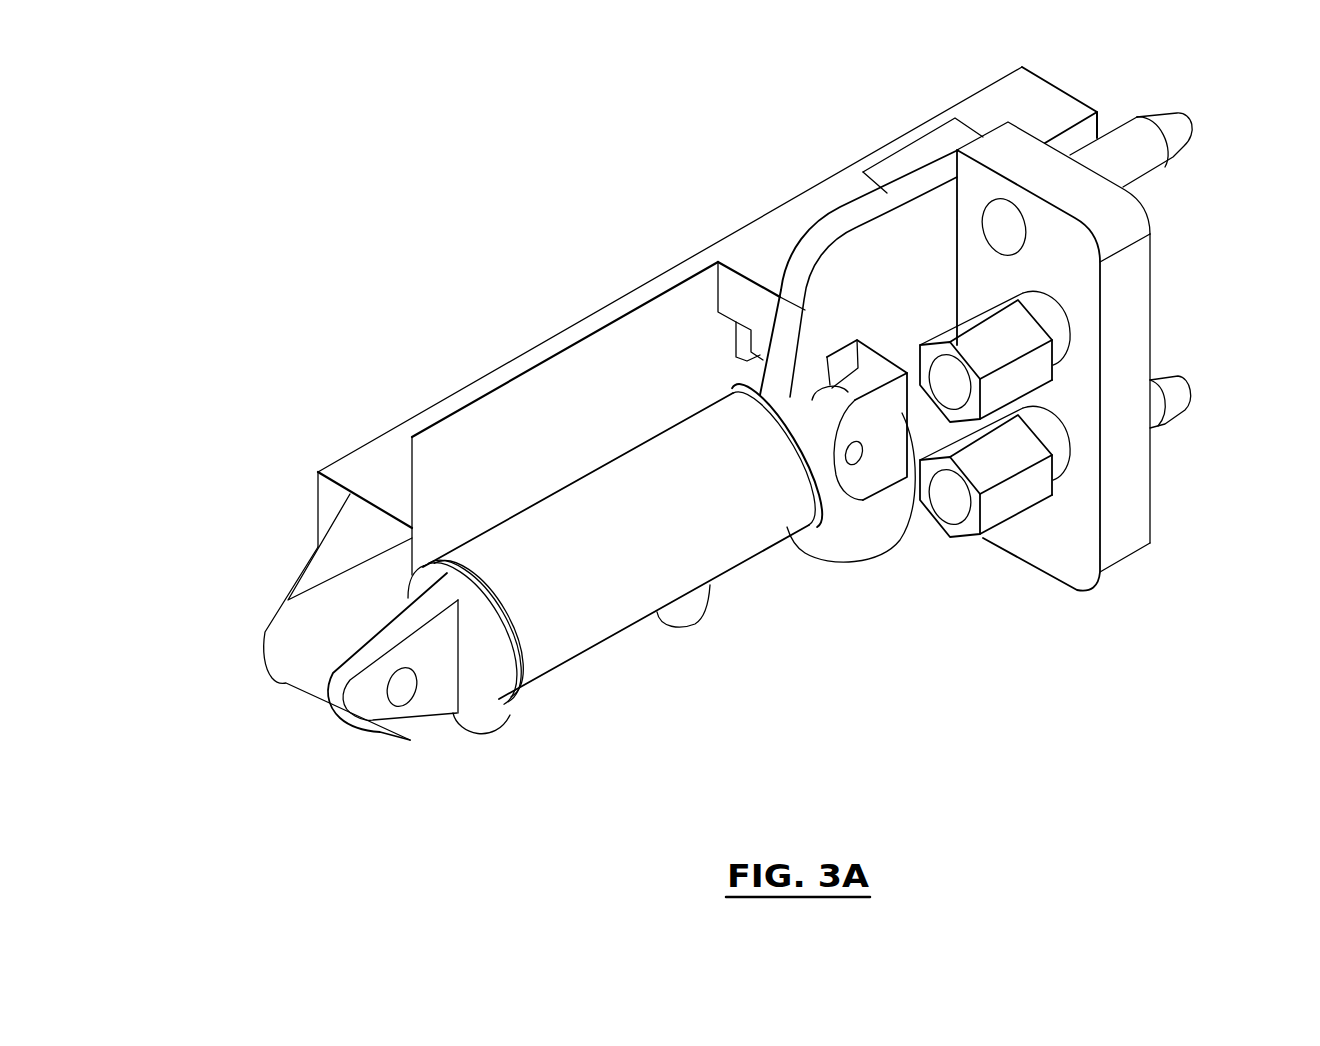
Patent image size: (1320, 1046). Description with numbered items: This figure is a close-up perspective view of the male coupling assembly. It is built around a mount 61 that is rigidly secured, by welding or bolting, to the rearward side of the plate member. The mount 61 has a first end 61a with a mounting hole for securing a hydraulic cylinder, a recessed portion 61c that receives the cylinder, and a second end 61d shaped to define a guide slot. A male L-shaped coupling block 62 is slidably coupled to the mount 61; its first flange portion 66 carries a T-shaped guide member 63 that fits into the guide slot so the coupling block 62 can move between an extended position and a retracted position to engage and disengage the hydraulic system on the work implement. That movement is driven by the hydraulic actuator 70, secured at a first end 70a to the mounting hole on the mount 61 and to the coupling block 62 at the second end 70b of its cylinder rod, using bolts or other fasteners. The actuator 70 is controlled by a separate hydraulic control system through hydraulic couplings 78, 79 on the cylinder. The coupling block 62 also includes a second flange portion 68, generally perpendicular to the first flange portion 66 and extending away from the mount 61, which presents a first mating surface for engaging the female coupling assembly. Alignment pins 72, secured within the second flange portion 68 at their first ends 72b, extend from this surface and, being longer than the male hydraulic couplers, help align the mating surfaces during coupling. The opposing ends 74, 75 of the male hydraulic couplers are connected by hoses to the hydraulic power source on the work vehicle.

The mount 61 is at (368, 467).
The first end of the mount 61a is at (288, 678).
The recessed portion 61c is at (500, 433).
The second end of the mount 61d is at (765, 257).
The male L-shaped coupling block 62 is at (1088, 588).
The T-shaped guide member 63 is at (743, 362).
The first flange portion 66 is at (870, 243).
The second flange portion 68 is at (1067, 396).
The hydraulic actuator 70 is at (580, 640).
The first end of the hydraulic actuator 70a is at (410, 697).
The second end of the cylinder rod 70b is at (855, 455).
The alignment pins 72 is at (1136, 142).
The first ends of the alignment pins 72b is at (1000, 230).
The opposing end of the first male hydraulic coupler 74 is at (957, 512).
The opposing end of the second male hydraulic coupler 75 is at (943, 387).
The hydraulic coupling 78 is at (680, 608).
The hydraulic coupling 79 is at (497, 717).